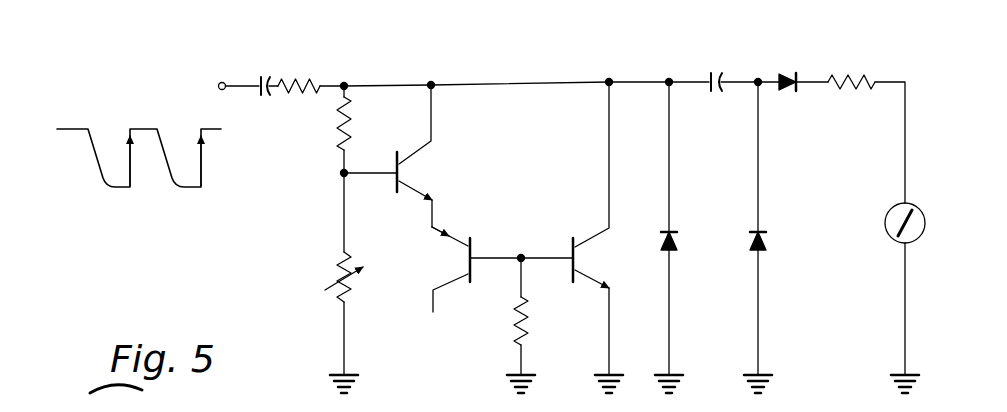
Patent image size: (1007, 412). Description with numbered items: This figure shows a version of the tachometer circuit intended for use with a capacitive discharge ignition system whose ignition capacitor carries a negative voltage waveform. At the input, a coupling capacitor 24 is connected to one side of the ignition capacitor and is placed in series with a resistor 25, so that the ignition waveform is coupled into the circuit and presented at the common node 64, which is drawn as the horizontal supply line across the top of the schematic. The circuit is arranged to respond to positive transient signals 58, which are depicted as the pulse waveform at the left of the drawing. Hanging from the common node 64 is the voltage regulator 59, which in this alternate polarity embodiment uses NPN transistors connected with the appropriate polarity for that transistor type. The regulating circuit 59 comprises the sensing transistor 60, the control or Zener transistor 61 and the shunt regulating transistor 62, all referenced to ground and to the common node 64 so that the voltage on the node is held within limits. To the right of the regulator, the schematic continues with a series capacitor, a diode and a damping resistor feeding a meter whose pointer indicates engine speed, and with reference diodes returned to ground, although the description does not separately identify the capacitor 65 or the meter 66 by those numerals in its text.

The coupling capacitor 24 is at (262, 97).
The resistor 25 is at (318, 66).
The positive transient signals 58 is at (131, 168).
The voltage regulator 59 is at (561, 209).
The sensing transistor 60 is at (402, 171).
The control or Zener transistor 61 is at (461, 232).
The shunt regulating transistor 62 is at (583, 262).
The common node 64 is at (434, 83).
The capacitor 65 is at (726, 58).
The meter 66 is at (903, 150).